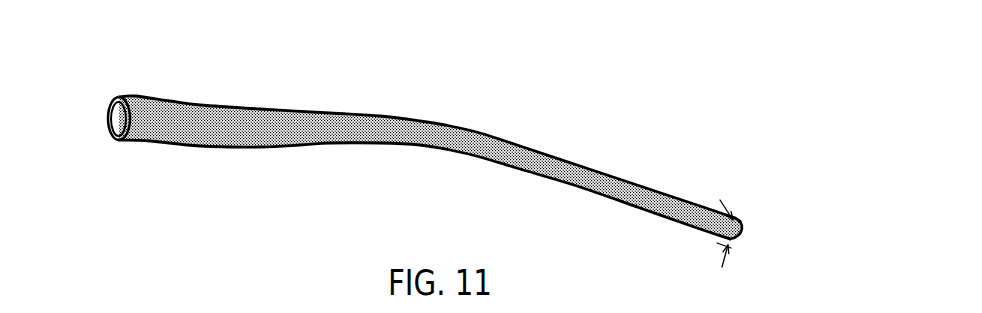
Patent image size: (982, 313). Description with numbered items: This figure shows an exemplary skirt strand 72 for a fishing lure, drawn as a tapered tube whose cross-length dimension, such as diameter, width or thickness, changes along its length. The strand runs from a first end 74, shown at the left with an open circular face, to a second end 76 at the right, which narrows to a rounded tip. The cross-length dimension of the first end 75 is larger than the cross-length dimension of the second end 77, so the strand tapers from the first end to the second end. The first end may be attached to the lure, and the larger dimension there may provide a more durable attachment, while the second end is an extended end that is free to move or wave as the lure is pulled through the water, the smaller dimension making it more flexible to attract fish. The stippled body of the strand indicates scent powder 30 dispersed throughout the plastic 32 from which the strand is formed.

The scent powder 30 is at (418, 139).
The plastic 32 is at (247, 110).
The skirt strand 72 is at (368, 128).
The first end 74 is at (117, 97).
The cross-length dimension of first end 75 is at (110, 116).
The second end 76 is at (720, 200).
The cross-length dimension of second end 77 is at (733, 218).